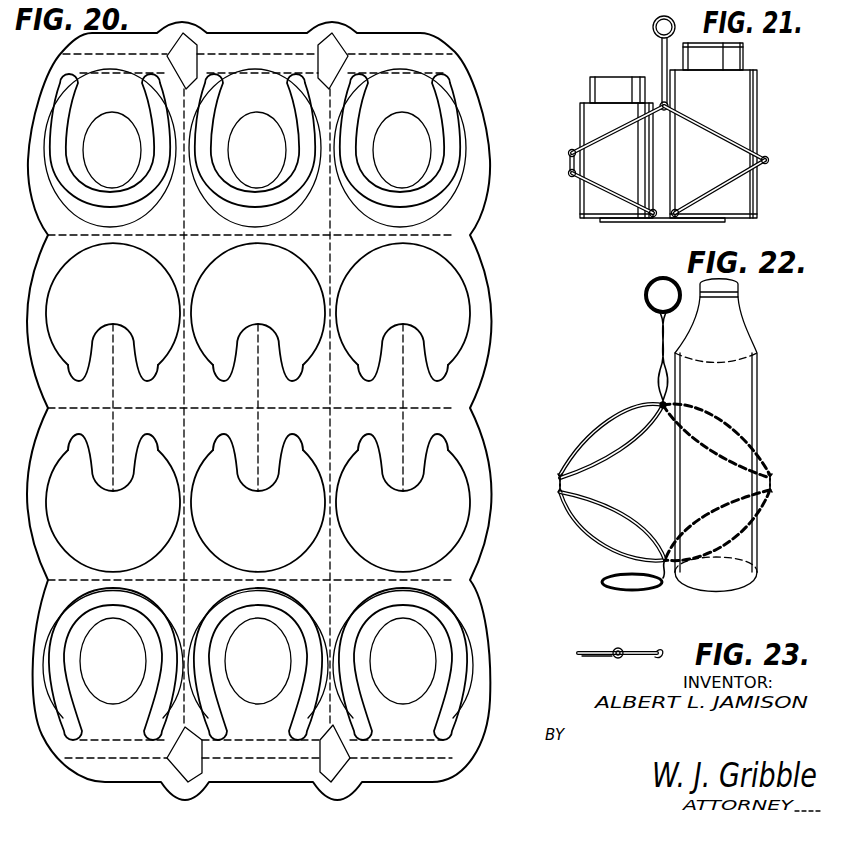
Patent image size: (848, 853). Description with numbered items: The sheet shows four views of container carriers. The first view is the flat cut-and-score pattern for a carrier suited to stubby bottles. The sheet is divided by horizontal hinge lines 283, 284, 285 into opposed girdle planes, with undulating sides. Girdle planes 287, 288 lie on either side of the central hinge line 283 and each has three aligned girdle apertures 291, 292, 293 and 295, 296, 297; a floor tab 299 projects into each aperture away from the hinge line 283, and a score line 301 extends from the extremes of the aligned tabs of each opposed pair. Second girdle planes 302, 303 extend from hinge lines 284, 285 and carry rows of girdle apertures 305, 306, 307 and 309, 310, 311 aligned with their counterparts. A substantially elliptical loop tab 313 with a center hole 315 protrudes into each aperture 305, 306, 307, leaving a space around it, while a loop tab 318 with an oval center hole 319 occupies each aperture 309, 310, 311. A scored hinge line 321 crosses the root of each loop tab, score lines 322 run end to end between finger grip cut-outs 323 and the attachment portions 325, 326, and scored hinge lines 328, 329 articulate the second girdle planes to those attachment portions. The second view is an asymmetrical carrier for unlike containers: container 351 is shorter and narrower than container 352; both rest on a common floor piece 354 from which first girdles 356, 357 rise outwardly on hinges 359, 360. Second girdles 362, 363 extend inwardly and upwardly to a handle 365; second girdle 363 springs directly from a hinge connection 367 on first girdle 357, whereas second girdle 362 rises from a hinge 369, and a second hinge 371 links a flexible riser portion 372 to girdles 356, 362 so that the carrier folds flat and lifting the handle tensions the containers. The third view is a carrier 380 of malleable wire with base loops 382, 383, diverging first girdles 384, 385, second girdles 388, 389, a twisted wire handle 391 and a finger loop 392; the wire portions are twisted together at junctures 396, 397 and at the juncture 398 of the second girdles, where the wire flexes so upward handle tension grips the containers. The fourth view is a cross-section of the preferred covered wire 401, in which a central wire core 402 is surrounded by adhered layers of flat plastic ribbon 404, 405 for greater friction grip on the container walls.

In FIG. 20, the second girdle plane 302 is at (466, 190).
In FIG. 20, the finger grip cut-outs 323 is at (185, 40).
In FIG. 20, the attachment portion 325 is at (248, 45).
In FIG. 20, the attachment portion 326 is at (253, 770).
In FIG. 20, the scored hinge line 328 is at (370, 52).
In FIG. 20, the scored hinge line 329 is at (288, 759).
In FIG. 20, the scored hinge line 321 is at (420, 72).
In FIG. 20, the score lines 322 is at (186, 262).
In FIG. 20, the hinge line 284 is at (442, 233).
In FIG. 20, the central hinge line 283 is at (440, 406).
In FIG. 20, the hinge line 285 is at (444, 580).
In FIG. 20, the loop tab 313 is at (124, 110).
In FIG. 20, the center hole 315 is at (139, 158).
In FIG. 20, the girdle aperture 307 is at (126, 220).
In FIG. 20, the girdle aperture 306 is at (271, 220).
In FIG. 20, the girdle aperture 305 is at (466, 130).
In FIG. 20, the girdle plane 287 is at (294, 304).
In FIG. 20, the girdle aperture 293 is at (95, 247).
In FIG. 20, the girdle aperture 292 is at (290, 257).
In FIG. 20, the girdle aperture 291 is at (438, 255).
In FIG. 20, the floor tab 299 is at (124, 345).
In FIG. 20, the score line 301 is at (112, 396).
In FIG. 20, the girdle plane 288 is at (294, 511).
In FIG. 20, the girdle aperture 297 is at (72, 548).
In FIG. 20, the girdle aperture 296 is at (222, 548).
In FIG. 20, the girdle aperture 295 is at (364, 548).
In FIG. 20, the second girdle plane 303 is at (295, 664).
In FIG. 20, the loop tab 318 is at (124, 613).
In FIG. 20, the center hole 319 is at (148, 659).
In FIG. 20, the girdle aperture 311 is at (182, 682).
In FIG. 20, the girdle aperture 310 is at (200, 700).
In FIG. 20, the girdle aperture 309 is at (346, 700).
In FIG. 21, the handle 365 is at (656, 52).
In FIG. 21, the container 351 is at (598, 120).
In FIG. 21, the second girdle 362 is at (608, 128).
In FIG. 21, the first girdle 356 is at (600, 195).
In FIG. 21, the container 352 is at (733, 85).
In FIG. 21, the first girdle 357 is at (732, 190).
In FIG. 21, the floor piece 354 is at (690, 222).
In FIG. 21, the riser portion 372 is at (580, 162).
In FIG. 21, the hinge 359 is at (652, 210).
In FIG. 21, the second girdle 363 is at (745, 122).
In FIG. 21, the hinge 360 is at (680, 207).
In FIG. 21, the hinge connection 367 is at (768, 158).
In FIG. 21, the hinge 369 is at (572, 150).
In FIG. 21, the second hinge 371 is at (572, 175).
In FIG. 22, the finger loop 392 is at (645, 298).
In FIG. 22, the handle 391 is at (658, 370).
In FIG. 22, the carrier 380 is at (706, 339).
In FIG. 22, the base loop 382 is at (728, 583).
In FIG. 22, the second girdle 389 is at (617, 422).
In FIG. 22, the first girdle 385 is at (607, 543).
In FIG. 22, the second girdle 388 is at (718, 420).
In FIG. 22, the first girdle 384 is at (740, 542).
In FIG. 22, the juncture of first and second girdles 397 is at (560, 470).
In FIG. 22, the juncture of first and second girdles 396 is at (772, 470).
In FIG. 22, the juncture of second girdles 398 is at (668, 403).
In FIG. 22, the base loop 383 is at (606, 586).
In FIG. 23, the pivot 401 is at (627, 658).
In FIG. 23, the central wire core 402 is at (606, 652).
In FIG. 23, the flat plastic ribbon 405 is at (600, 660).
In FIG. 23, the flat plastic ribbon 404 is at (660, 637).